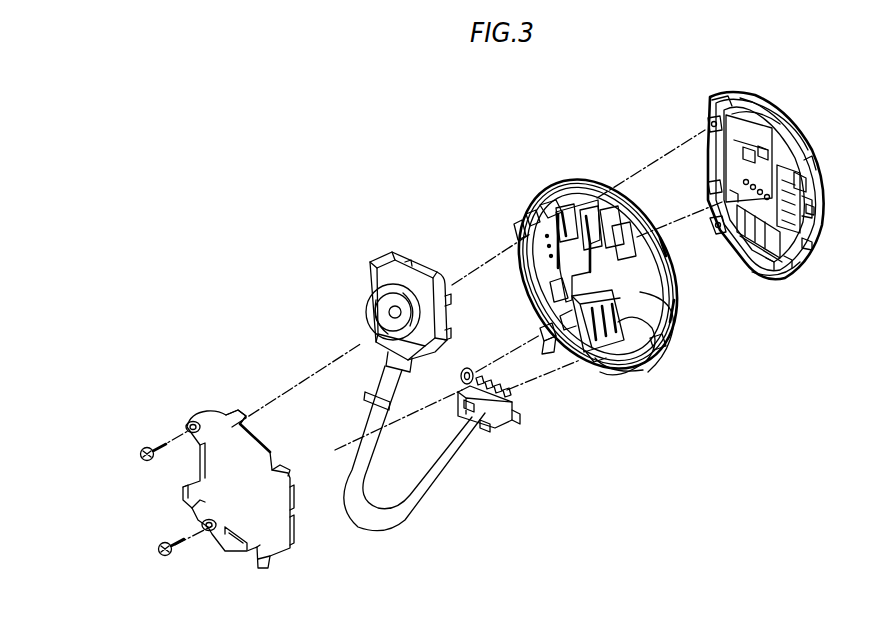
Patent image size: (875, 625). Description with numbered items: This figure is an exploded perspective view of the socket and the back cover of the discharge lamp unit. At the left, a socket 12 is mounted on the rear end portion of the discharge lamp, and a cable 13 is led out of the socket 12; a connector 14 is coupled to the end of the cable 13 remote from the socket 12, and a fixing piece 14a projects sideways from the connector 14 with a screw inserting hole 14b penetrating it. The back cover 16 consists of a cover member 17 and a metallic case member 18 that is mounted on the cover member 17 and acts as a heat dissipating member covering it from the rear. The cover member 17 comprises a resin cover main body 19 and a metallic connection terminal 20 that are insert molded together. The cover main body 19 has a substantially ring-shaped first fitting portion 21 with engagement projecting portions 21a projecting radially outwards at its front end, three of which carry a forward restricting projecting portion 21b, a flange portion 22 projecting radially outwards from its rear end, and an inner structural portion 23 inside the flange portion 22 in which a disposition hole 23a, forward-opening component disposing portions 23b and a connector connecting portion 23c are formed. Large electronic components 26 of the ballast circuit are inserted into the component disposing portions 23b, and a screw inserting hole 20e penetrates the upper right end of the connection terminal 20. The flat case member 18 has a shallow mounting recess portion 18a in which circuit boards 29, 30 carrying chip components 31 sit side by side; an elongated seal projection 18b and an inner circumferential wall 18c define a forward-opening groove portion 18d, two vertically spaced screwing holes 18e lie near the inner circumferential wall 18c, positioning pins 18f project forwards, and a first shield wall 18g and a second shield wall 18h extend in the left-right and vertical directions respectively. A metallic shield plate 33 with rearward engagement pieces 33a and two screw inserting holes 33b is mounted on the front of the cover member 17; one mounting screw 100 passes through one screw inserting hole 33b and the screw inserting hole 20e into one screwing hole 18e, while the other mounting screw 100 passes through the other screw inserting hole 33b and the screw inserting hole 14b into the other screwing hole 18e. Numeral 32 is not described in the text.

The socket 12 is at (395, 252).
The cable 13 is at (407, 530).
The connector 14 is at (520, 422).
The fixing piece 14a is at (480, 378).
The screw inserting hole 14b is at (466, 372).
The back cover 16 is at (469, 104).
The cover member 17 is at (548, 185).
The case member 18 is at (710, 100).
The mounting recess portion 18a is at (762, 110).
The elongated seal projection 18b is at (790, 276).
The inner circumferential wall 18c is at (762, 118).
The groove portion 18d is at (722, 96).
The screwing holes 18e is at (710, 122).
The positioning pins 18f is at (712, 206).
The first shield wall 18g is at (812, 204).
The second shield wall 18h is at (728, 160).
The cover main body 19 is at (566, 180).
The connection terminal 20 is at (556, 262).
The screw inserting hole 20e is at (548, 205).
The first fitting portion 21 is at (608, 372).
The engagement projecting portions 21a is at (526, 216).
The restricting projecting portion 21b is at (516, 230).
The flange portion 22 is at (650, 366).
The inner structural portion 23 is at (650, 322).
The disposition hole 23a is at (548, 282).
The component disposing portions 23b is at (612, 212).
The connector connecting portion 23c is at (590, 360).
The electronic components 26 is at (572, 208).
The circuit board 29 is at (754, 270).
The circuit board 30 is at (808, 226).
The chip components 31 is at (730, 192).
The side tab 32 is at (806, 184).
The shield plate 33 is at (210, 410).
The engagement pieces 33a is at (245, 415).
The screw inserting holes 33b is at (190, 421).
The mounting screw 100 is at (147, 450).